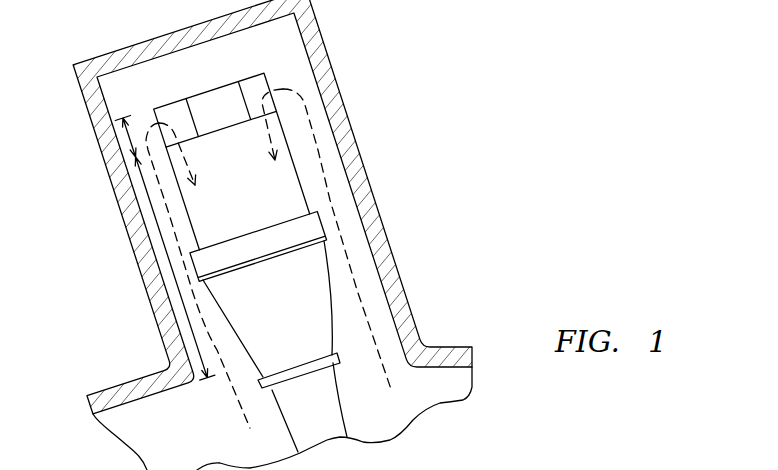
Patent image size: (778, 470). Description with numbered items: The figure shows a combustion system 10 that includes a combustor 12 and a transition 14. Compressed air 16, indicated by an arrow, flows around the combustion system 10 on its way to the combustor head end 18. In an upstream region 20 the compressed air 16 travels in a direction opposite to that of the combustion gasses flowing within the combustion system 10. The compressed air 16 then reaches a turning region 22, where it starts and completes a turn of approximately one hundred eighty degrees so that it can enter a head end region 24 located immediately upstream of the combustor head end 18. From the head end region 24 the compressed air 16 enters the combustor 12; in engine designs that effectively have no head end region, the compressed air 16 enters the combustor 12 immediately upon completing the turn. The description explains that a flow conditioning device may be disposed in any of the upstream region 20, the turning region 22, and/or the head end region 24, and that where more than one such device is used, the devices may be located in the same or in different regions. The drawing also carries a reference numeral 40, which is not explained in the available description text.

The combustion system 10 is at (384, 61).
The combustor 12 is at (231, 208).
The transition 14 is at (265, 318).
The compressed air 16 is at (322, 165).
The combustor head end 18 is at (222, 125).
The upstream region 20 is at (170, 257).
The turning region 22 is at (128, 138).
The head end region 24 is at (210, 107).
The lower housing 40 is at (590, 464).